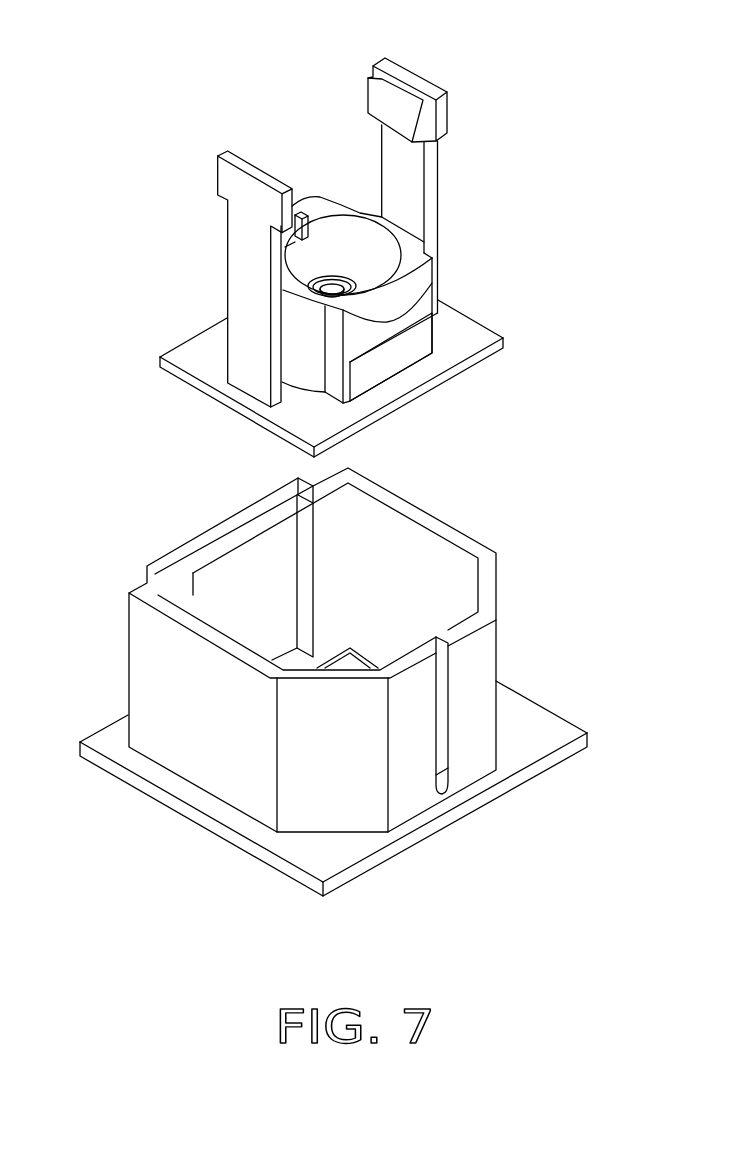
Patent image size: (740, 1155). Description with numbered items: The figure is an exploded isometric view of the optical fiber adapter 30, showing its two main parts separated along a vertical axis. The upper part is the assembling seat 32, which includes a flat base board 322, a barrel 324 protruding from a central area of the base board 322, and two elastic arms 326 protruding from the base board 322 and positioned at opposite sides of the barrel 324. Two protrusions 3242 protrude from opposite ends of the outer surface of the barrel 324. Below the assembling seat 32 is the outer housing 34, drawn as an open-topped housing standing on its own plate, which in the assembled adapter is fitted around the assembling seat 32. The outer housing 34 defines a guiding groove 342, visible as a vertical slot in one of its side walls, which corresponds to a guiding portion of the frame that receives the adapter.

The optical fiber adapter 30 is at (151, 73).
The assembling seat 32 is at (438, 380).
The base board 322 is at (463, 338).
The barrel 324 is at (347, 213).
The protrusions 3242 is at (407, 320).
The elastic arms 326 is at (430, 175).
The outer housing 34 is at (525, 775).
The guiding groove 342 is at (442, 680).